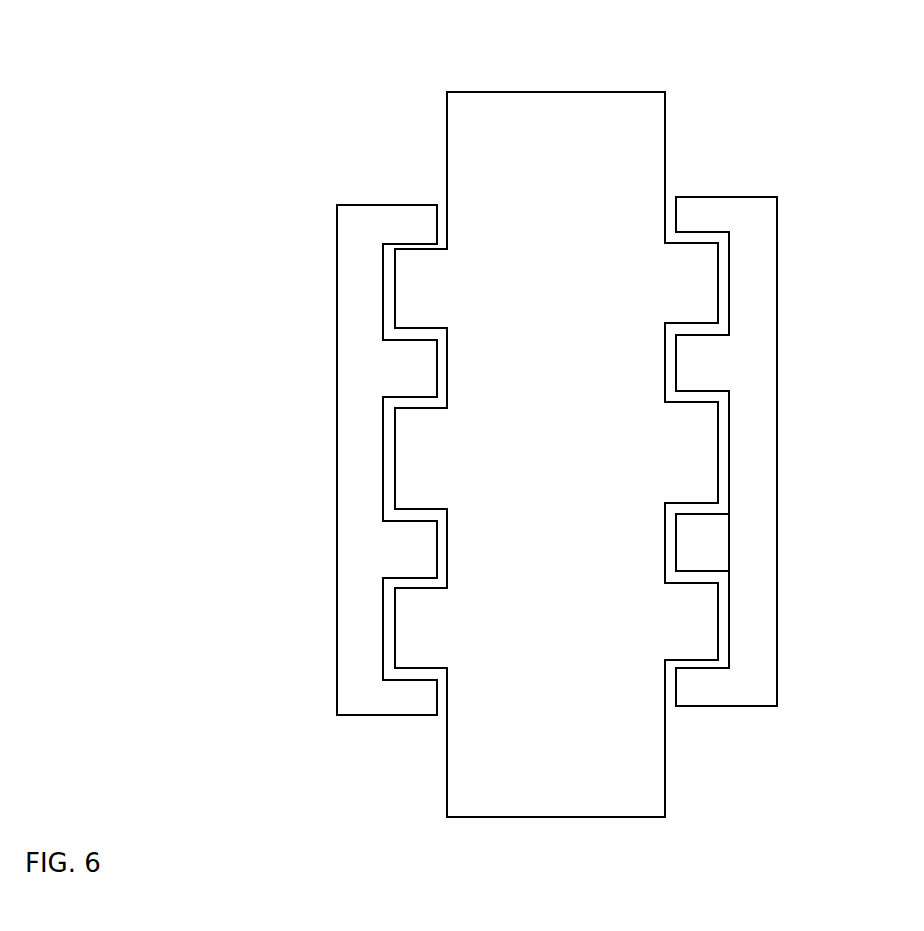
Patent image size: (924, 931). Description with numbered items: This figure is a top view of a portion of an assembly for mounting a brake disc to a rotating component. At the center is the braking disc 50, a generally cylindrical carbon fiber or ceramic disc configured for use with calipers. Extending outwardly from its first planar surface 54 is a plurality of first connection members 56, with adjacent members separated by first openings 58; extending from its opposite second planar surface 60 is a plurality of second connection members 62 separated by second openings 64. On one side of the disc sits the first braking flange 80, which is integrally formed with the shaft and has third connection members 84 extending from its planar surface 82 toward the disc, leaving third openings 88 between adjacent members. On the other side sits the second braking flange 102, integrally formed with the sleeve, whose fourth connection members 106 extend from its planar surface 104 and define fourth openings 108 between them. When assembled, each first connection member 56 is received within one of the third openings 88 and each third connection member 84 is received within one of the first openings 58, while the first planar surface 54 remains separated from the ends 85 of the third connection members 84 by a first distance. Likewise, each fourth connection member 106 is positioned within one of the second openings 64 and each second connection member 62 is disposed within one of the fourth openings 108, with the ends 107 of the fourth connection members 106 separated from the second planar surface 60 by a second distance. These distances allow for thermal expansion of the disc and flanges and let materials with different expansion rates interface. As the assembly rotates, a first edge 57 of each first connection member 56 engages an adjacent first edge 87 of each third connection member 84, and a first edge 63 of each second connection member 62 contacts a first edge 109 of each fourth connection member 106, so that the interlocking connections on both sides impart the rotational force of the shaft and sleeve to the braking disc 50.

The braking disc 50 is at (556, 104).
The first planar surface 54 is at (445, 148).
The second planar surface 60 is at (668, 102).
The first braking flange 80 is at (337, 291).
The third connection member 84 is at (412, 223).
The first connection member 56 is at (412, 277).
The third opening 88 is at (390, 288).
The first opening 58 is at (442, 347).
The first edge of first connection member 57 is at (427, 513).
The first edge of third connection member 87 is at (400, 523).
The planar surface of first braking flange 82 is at (383, 633).
The end of third connection member 85 is at (437, 703).
The second braking flange 102 is at (777, 542).
The fourth connection member 106 is at (702, 210).
The second connection member 62 is at (697, 272).
The fourth opening 108 is at (723, 282).
The second opening 64 is at (670, 364).
The first edge of fourth connection member 109 is at (697, 390).
The first edge of second connection member 63 is at (705, 582).
The planar surface of second braking flange 104 is at (727, 640).
The end of fourth connection member 107 is at (668, 693).